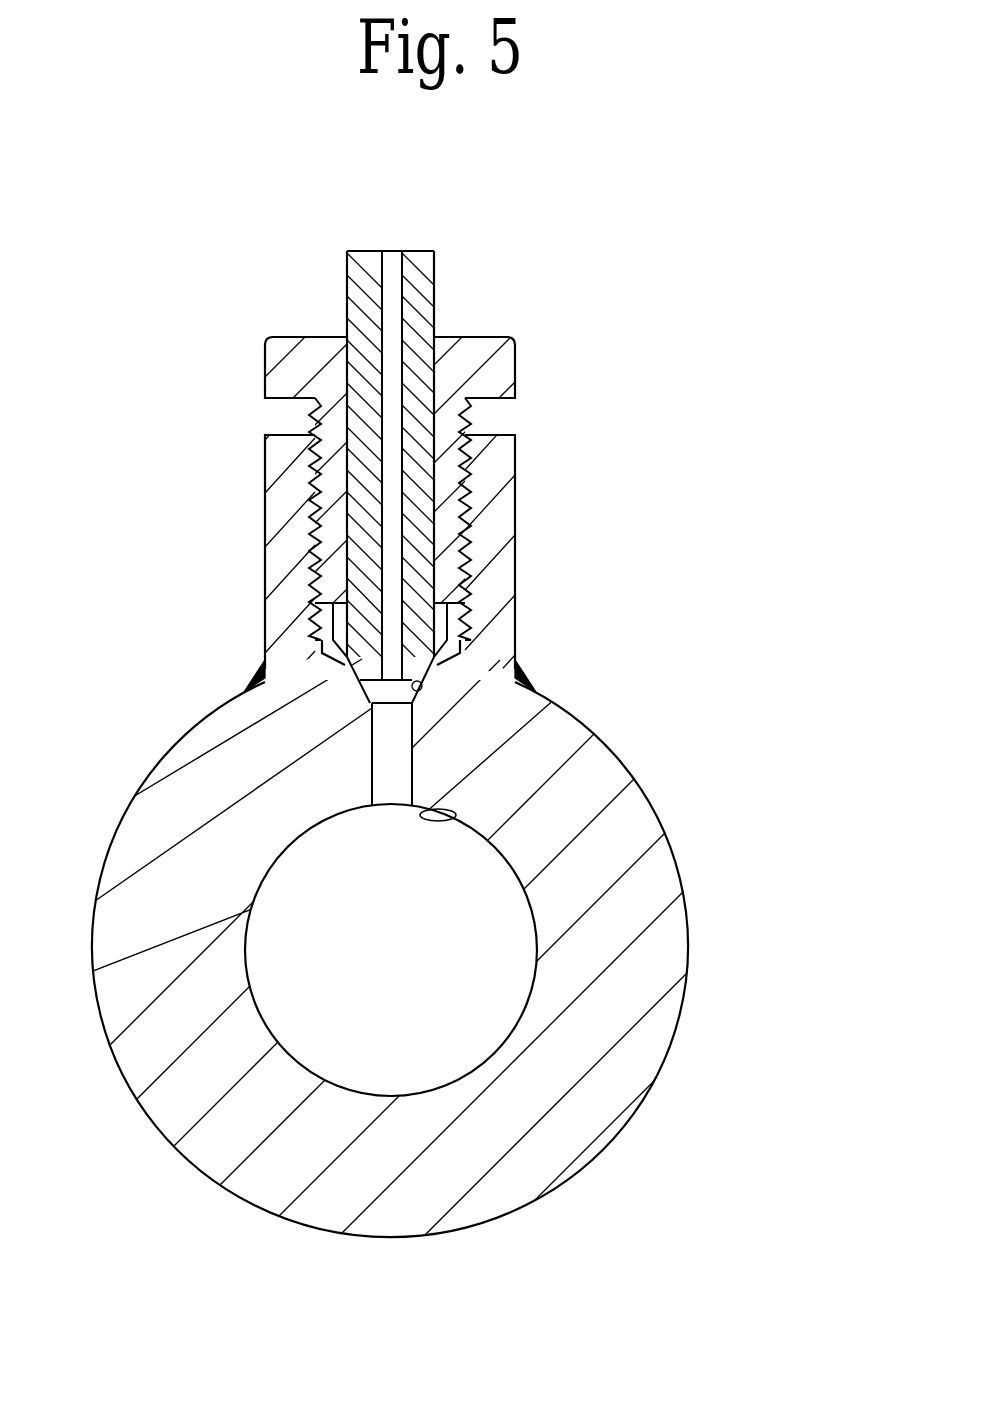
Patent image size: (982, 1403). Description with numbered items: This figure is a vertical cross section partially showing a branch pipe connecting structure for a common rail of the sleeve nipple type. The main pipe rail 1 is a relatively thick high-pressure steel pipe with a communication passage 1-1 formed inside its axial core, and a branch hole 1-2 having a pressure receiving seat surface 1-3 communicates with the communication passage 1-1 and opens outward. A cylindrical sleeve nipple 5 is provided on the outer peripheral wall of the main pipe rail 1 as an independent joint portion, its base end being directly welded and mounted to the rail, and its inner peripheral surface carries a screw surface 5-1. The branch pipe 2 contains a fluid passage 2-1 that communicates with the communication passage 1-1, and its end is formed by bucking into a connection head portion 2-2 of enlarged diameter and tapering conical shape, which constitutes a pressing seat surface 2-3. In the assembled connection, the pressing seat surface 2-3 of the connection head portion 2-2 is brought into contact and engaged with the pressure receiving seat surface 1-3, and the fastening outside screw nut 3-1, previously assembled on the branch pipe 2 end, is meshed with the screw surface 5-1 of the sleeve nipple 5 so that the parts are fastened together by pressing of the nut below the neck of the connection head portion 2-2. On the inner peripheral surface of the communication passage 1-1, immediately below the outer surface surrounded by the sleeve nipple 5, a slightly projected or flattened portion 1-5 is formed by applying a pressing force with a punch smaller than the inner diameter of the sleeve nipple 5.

The main pipe rail 1 is at (628, 848).
The communication passage 1-1 is at (527, 976).
The branch hole 1-2 is at (386, 799).
The pressure receiving seat surface 1-3 is at (433, 668).
The slightly projected or flattened portion 1-5 is at (467, 820).
The branch pipe 2 is at (434, 269).
The fluid passage 2-1 is at (385, 287).
The connection head portion 2-2 is at (447, 620).
The pressing seat surface 2-3 is at (343, 665).
The fastening outside screw nut 3-1 is at (505, 360).
The sleeve nipple 5 is at (497, 489).
The screw surface 5-1 is at (465, 463).